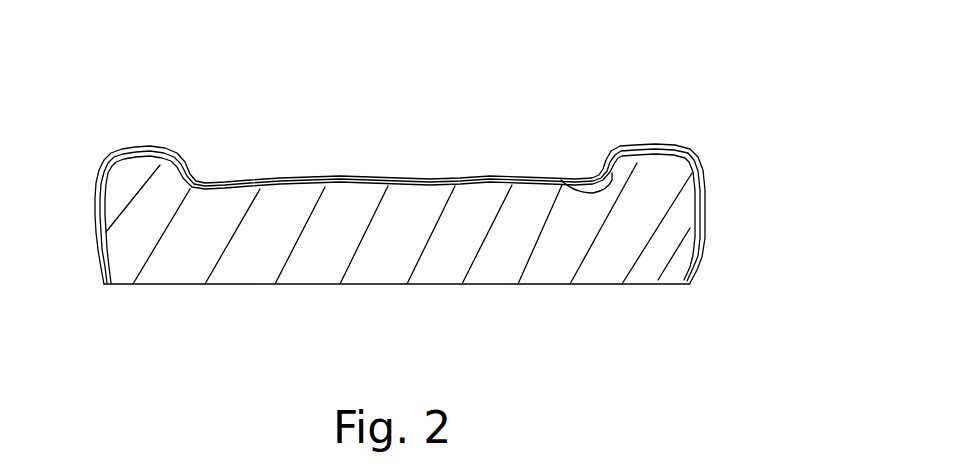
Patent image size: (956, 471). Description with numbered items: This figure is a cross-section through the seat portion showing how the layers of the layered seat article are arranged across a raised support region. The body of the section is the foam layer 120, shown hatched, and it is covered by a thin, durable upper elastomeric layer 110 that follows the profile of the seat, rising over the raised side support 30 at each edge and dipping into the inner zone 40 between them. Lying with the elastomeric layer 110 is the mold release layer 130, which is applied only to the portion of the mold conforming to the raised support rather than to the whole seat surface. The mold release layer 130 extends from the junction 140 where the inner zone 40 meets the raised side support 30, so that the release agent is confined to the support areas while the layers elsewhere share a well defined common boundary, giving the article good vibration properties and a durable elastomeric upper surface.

The raised side support 30 is at (133, 145).
The frontal raised support 40 is at (276, 139).
The elastomeric layer 110 is at (700, 175).
The foam layer 120 is at (648, 263).
The mold release layer 130 is at (657, 152).
The junction 140 is at (562, 181).